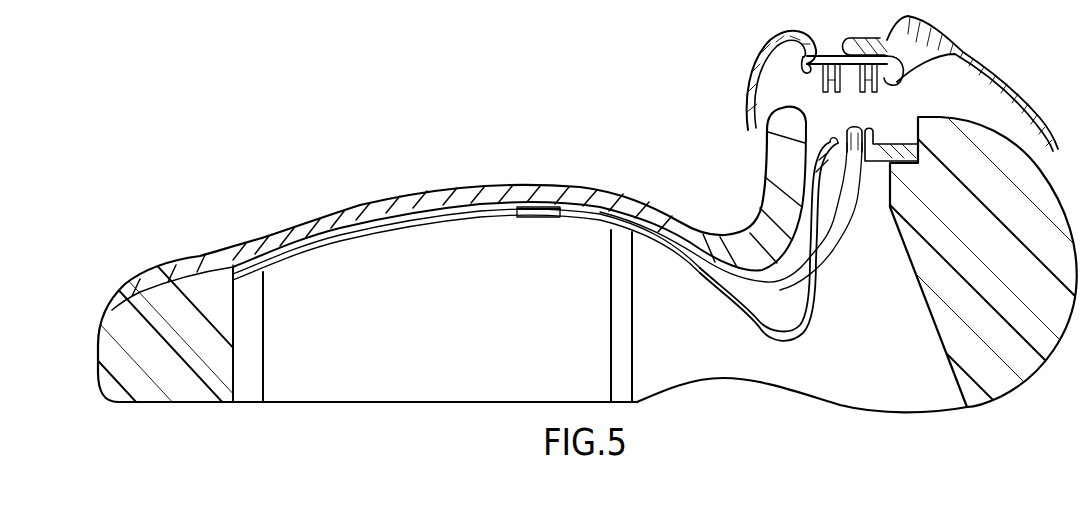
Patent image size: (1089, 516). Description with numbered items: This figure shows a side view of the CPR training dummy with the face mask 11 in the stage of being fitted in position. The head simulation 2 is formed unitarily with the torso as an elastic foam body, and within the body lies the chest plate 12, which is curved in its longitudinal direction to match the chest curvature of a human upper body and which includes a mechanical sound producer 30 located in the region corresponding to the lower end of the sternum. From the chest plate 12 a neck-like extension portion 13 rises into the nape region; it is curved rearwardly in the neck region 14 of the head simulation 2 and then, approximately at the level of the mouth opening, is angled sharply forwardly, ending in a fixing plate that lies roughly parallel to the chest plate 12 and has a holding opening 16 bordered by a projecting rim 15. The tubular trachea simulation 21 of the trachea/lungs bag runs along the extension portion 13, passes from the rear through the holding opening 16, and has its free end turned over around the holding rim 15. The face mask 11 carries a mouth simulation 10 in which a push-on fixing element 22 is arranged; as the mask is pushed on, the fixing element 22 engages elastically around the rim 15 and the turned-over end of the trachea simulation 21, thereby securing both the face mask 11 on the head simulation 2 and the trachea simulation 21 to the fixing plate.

The head simulation 2 is at (937, 373).
The mouth simulation 10 is at (842, 50).
The face mask 11 is at (743, 78).
The chest plate 12 is at (410, 232).
The neck-like extension portion 13 is at (728, 302).
The neck region 14 is at (722, 232).
The projecting rim 15 is at (890, 140).
The holding opening 16 is at (852, 130).
The trachea simulation 21 is at (847, 237).
The push-on fixing element 22 is at (947, 50).
The mechanical sound producer 30 is at (527, 224).